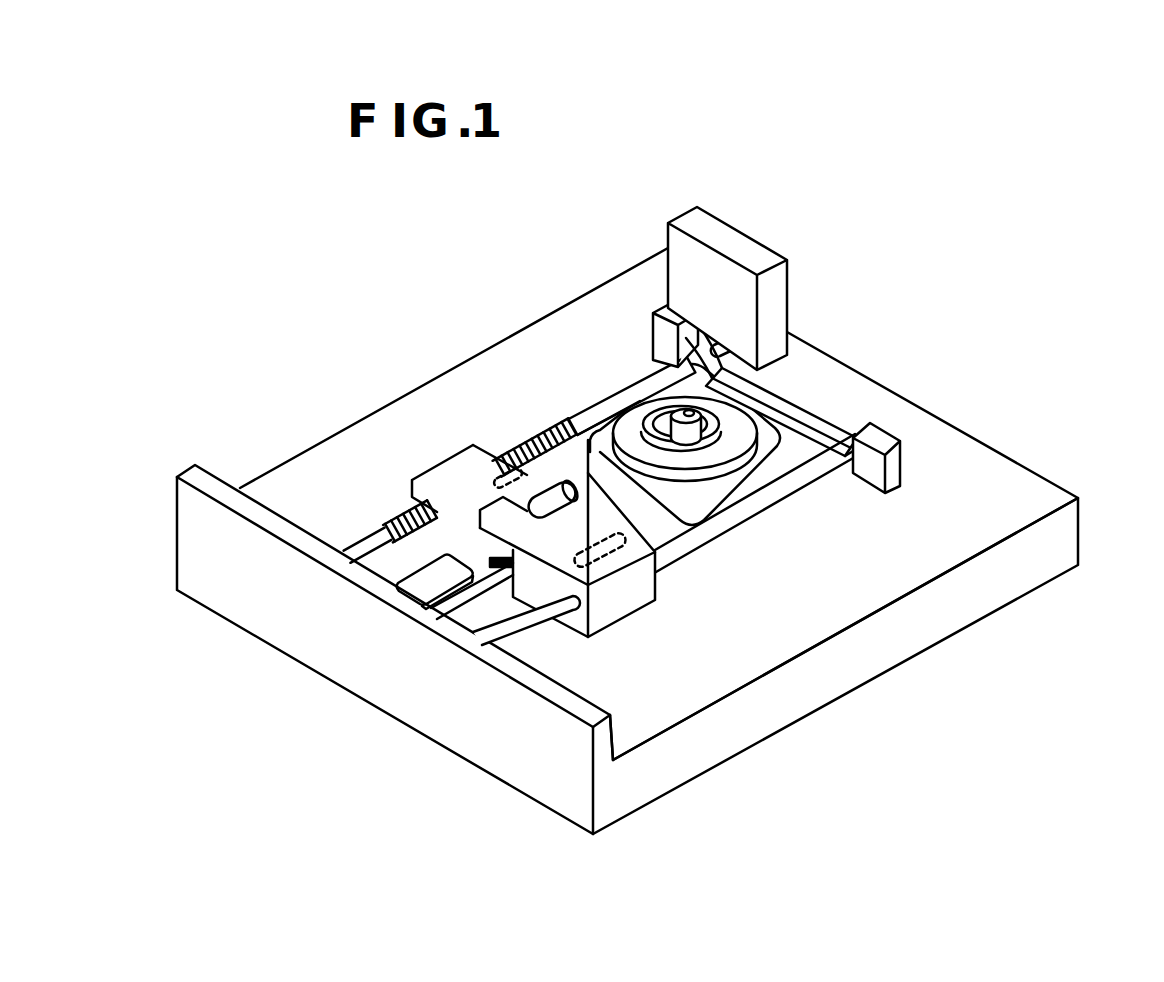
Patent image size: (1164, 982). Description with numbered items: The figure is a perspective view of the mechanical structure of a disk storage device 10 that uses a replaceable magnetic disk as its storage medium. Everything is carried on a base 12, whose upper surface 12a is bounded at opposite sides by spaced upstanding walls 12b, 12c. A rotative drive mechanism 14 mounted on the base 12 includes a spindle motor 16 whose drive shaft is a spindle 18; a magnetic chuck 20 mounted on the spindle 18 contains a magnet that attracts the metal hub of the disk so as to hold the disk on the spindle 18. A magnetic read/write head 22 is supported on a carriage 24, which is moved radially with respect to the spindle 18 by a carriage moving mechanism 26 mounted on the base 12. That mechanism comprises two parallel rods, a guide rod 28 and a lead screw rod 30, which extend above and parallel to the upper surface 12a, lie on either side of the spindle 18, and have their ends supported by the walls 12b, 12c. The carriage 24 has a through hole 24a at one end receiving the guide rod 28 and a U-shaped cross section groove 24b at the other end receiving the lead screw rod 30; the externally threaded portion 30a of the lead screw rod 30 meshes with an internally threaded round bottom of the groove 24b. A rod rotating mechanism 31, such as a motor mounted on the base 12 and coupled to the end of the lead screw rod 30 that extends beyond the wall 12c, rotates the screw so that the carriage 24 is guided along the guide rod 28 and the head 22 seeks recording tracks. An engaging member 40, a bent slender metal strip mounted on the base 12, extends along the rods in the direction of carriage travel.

The disk storage device 10 is at (500, 330).
The base 12 is at (903, 641).
The upper surface of the base 12a is at (1010, 490).
The upstanding wall 12b is at (604, 752).
The upstanding wall 12c is at (907, 478).
The rotative drive mechanism 14 is at (795, 471).
The spindle motor 16 is at (772, 440).
The spindle 18 is at (697, 412).
The magnetic chuck 20 is at (722, 425).
The magnetic read/write head 22 is at (572, 478).
The carriage 24 is at (657, 577).
The through hole 24a is at (577, 620).
The U-shaped cross section groove 24b is at (442, 508).
The carriage moving mechanism 26 is at (627, 328).
The guide rod 28 is at (736, 527).
The lead screw rod 30 is at (624, 392).
The externally threaded portion 30a is at (392, 514).
The rod rotating mechanism 31 is at (748, 245).
The engaging member 40 is at (470, 612).